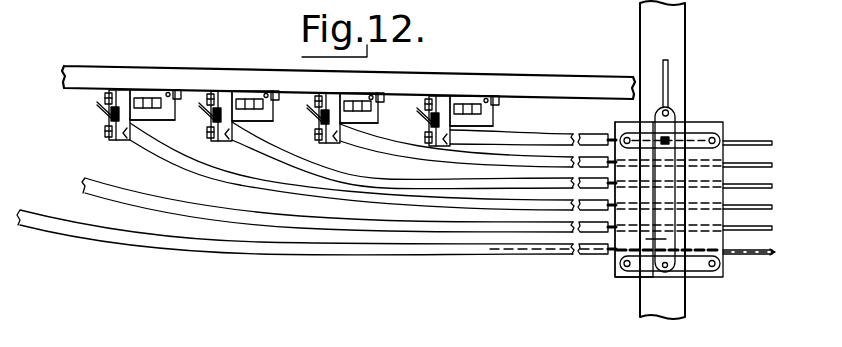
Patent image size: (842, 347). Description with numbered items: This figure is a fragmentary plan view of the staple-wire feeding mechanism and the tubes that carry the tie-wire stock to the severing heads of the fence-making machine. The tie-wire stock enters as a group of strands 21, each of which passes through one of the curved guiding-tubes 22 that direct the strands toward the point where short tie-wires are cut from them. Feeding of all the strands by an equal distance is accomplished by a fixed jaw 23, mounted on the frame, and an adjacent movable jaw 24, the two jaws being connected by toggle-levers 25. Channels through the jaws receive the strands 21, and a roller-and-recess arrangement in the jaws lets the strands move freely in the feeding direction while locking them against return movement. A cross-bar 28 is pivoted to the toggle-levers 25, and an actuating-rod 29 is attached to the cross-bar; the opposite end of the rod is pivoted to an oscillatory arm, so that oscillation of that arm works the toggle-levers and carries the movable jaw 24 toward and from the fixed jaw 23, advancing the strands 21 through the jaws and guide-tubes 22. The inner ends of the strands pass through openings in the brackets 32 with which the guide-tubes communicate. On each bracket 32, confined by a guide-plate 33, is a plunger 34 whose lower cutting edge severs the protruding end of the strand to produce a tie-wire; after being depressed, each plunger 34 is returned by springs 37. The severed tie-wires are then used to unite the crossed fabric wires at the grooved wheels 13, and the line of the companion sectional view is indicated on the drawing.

The grooved wheels 13 is at (633, 256).
The strands 21 is at (762, 146).
The curved guiding-tubes 22 is at (541, 134).
The fixed jaw 23 is at (726, 272).
The movable jaw 24 is at (618, 272).
The toggle-levers 25 is at (686, 135).
The cross-bar 28 is at (644, 242).
The actuating-rod 29 is at (669, 82).
The brackets 32 is at (127, 95).
The guide-plate 33 is at (108, 118).
The plunger 34 is at (110, 103).
The springs 37 is at (162, 118).